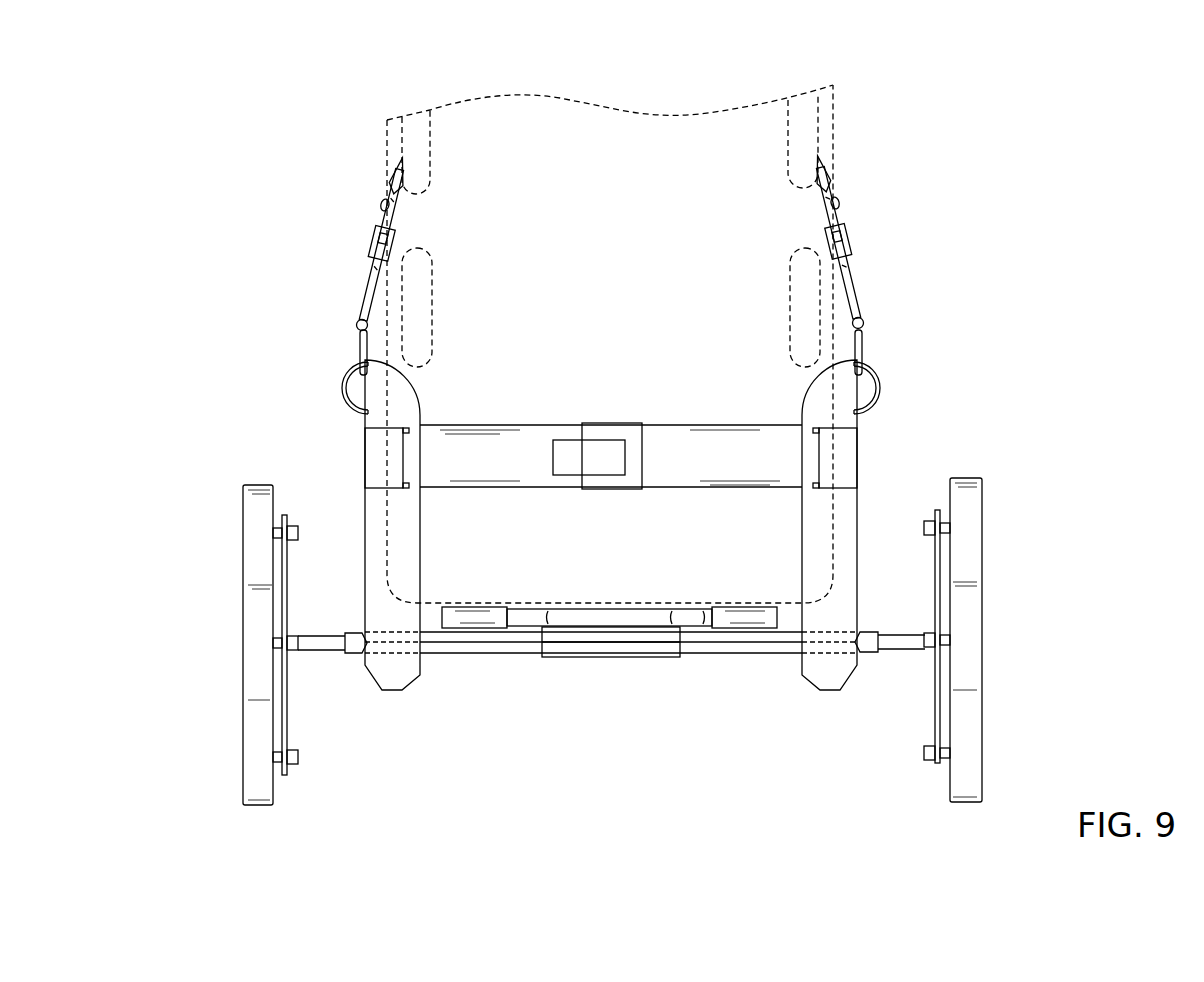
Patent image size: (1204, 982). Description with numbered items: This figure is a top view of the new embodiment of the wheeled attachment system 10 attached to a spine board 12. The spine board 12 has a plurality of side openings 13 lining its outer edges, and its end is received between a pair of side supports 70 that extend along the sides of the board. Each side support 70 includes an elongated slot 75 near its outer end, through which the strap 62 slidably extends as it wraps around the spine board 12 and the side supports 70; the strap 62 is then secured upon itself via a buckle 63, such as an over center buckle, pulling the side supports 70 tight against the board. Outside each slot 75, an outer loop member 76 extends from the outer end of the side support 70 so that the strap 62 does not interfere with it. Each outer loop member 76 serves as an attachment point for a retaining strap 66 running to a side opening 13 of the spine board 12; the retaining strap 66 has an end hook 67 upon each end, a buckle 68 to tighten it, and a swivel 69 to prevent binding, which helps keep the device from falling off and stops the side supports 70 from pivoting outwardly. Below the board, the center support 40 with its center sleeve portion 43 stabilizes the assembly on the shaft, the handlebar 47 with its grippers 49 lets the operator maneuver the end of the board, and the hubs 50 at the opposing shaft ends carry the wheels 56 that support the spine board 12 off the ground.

The wheeled attachment system 10 is at (1082, 117).
The spine board 12 is at (457, 103).
The side openings 13 is at (432, 155).
The center support 40 is at (645, 660).
The center sleeve portion 43 is at (562, 657).
The handlebar 47 is at (607, 612).
The grippers 49 is at (470, 607).
The hubs 50 is at (300, 720).
The wheels 56 is at (243, 555).
The strap 62 is at (540, 425).
The buckle 63 is at (620, 423).
The retaining strap 66 is at (373, 268).
The end hook 67 is at (402, 205).
The buckle 68 is at (376, 236).
The swivel 69 is at (356, 325).
The side supports 70 is at (363, 512).
The elongated slot 75 is at (408, 428).
The outer loop member 76 is at (345, 396).